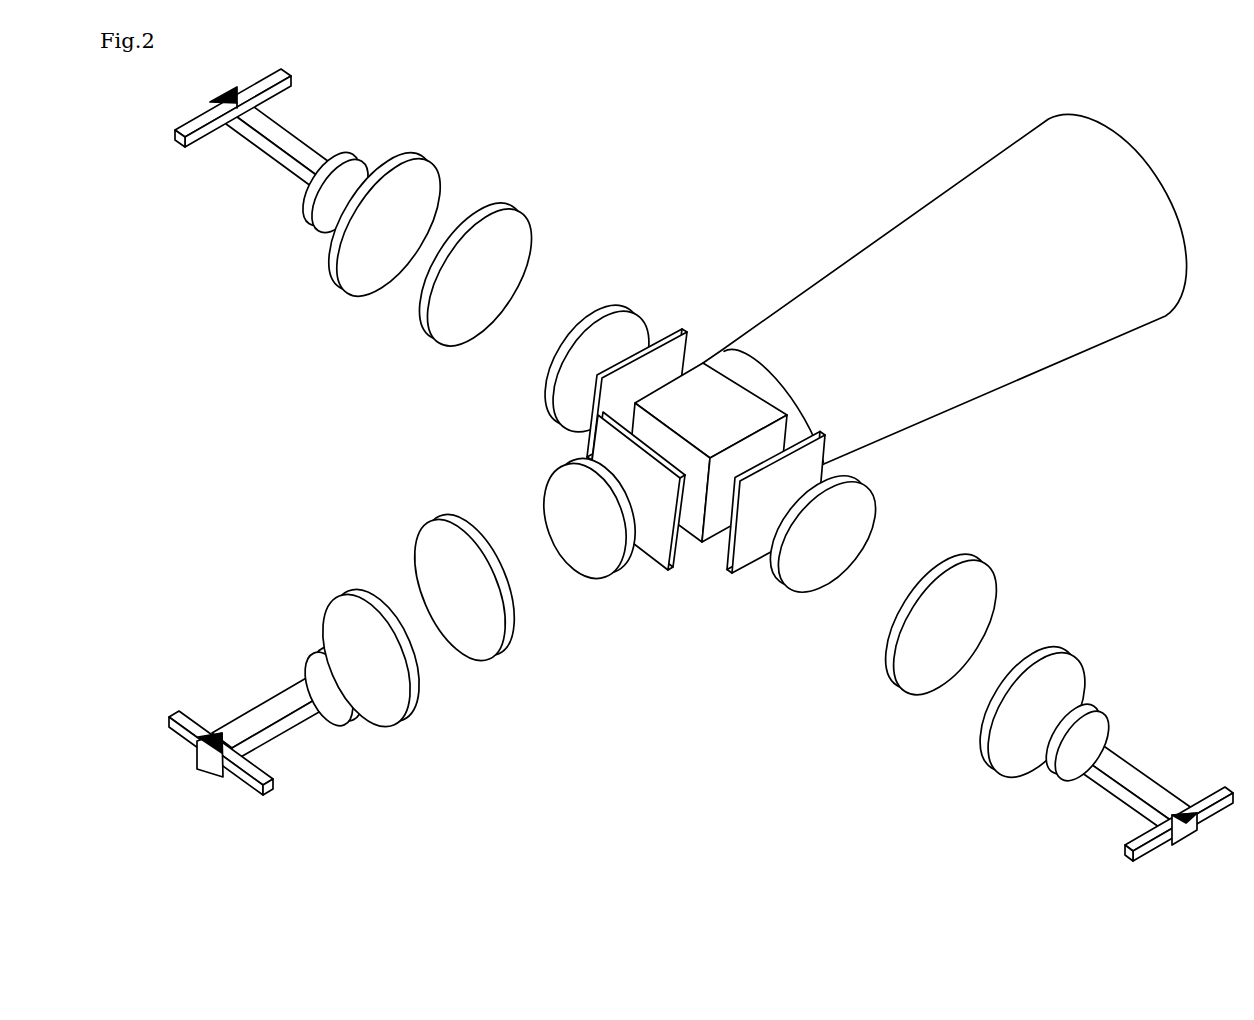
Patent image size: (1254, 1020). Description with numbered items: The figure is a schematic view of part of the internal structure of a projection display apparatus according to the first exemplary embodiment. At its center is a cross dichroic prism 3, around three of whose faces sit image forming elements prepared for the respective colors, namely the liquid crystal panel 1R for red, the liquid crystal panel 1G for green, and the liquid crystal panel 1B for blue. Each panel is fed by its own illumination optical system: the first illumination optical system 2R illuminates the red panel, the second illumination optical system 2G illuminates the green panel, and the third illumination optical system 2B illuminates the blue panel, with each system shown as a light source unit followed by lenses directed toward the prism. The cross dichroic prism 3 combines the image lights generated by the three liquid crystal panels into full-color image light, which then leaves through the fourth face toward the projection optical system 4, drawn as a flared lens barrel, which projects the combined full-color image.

The liquid crystal panel 1B is at (681, 328).
The liquid crystal panel 1G is at (662, 560).
The liquid crystal panel 1R is at (829, 433).
The third illumination optical system 2B is at (313, 116).
The second illumination optical system 2G is at (266, 684).
The first illumination optical system 2R is at (1157, 742).
The cross dichroic prism 3 is at (702, 372).
The projection optical system 4 is at (959, 172).